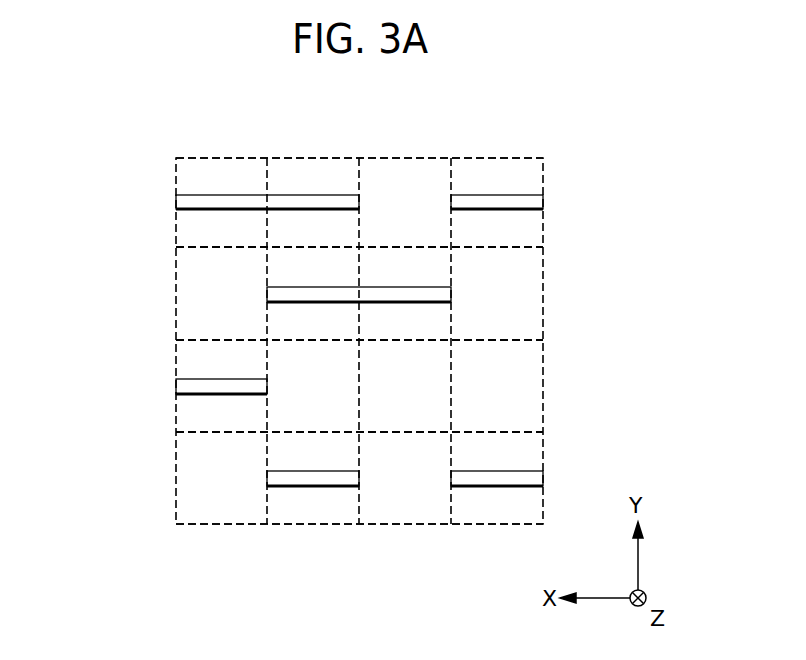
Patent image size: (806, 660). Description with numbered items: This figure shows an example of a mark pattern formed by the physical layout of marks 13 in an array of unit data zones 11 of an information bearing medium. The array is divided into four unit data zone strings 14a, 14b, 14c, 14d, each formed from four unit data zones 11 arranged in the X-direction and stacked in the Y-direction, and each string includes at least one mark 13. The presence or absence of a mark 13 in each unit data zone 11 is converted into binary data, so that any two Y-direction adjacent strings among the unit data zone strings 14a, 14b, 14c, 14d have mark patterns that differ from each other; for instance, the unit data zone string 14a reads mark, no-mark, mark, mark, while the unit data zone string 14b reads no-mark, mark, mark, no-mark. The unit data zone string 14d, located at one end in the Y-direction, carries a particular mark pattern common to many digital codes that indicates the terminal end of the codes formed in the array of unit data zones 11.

The unit data zone 11 is at (603, 176).
The mark 13 is at (218, 198).
The unit data zone string 14a is at (164, 158).
The unit data zone string 14b is at (164, 247).
The unit data zone string 14c is at (164, 340).
The unit data zone string 14d is at (164, 432).